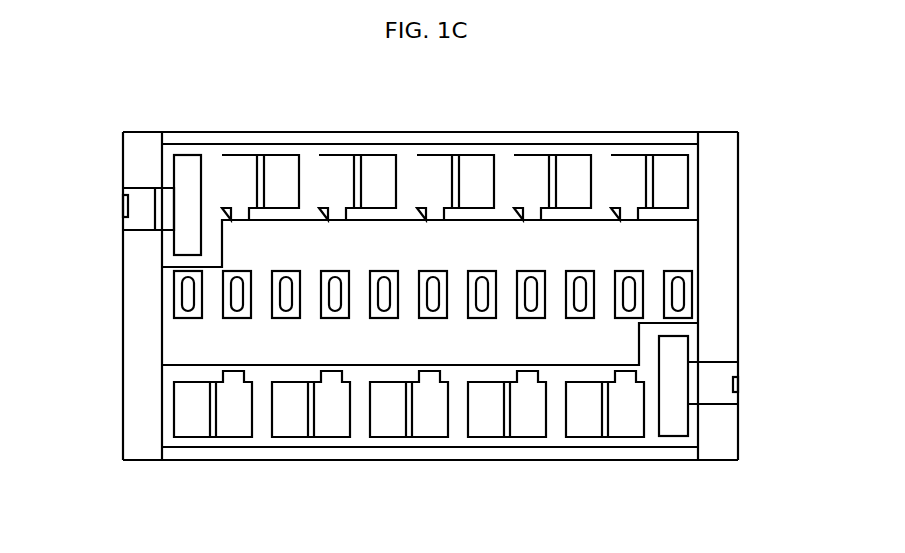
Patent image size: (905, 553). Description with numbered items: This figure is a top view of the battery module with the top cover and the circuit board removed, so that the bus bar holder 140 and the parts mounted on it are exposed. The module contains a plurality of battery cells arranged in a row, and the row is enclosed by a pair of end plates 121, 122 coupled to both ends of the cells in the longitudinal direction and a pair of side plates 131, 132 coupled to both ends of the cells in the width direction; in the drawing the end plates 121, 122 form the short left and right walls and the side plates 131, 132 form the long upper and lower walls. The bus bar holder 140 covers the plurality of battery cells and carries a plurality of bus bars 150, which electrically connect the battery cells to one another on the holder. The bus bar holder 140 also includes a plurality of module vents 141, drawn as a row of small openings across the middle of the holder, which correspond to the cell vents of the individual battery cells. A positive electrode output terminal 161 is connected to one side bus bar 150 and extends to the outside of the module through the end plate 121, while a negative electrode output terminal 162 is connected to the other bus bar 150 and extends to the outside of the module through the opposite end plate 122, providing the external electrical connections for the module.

The end plate 121 is at (130, 397).
The end plate 122 is at (727, 222).
The side plate 131 is at (312, 131).
The side plate 132 is at (566, 461).
The bus bar holder 140 is at (408, 249).
The module vents 141 is at (477, 269).
The bus bars 150 is at (623, 158).
The positive electrode output terminal 161 is at (122, 208).
The negative electrode output terminal 162 is at (732, 385).